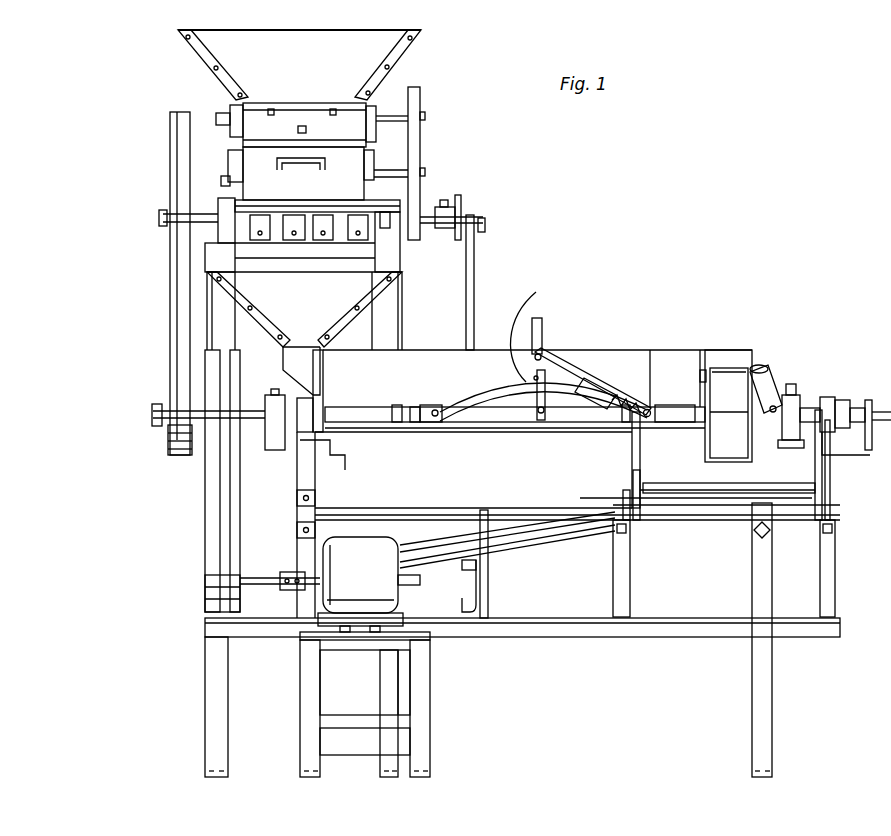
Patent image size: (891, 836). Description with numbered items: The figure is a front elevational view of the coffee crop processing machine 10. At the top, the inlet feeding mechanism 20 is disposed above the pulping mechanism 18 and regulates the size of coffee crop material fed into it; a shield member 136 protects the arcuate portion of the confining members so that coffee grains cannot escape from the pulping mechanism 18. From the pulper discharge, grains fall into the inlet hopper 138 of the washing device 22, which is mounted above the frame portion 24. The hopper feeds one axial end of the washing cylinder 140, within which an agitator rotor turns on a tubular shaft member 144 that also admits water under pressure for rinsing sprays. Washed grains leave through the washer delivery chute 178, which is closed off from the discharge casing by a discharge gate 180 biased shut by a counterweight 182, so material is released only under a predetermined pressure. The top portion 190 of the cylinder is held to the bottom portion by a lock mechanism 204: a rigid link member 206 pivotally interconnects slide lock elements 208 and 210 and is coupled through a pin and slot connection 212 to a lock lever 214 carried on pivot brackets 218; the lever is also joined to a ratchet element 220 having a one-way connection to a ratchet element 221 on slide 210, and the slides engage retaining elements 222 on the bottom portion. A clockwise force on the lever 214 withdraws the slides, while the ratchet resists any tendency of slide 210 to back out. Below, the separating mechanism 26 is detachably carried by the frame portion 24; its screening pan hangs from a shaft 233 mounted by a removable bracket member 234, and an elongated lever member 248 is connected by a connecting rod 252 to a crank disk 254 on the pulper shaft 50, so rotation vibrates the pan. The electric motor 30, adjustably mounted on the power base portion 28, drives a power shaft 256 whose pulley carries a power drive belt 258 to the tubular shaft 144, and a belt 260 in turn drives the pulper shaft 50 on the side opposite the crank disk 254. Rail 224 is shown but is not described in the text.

The coffee crop processing machine 10 is at (583, 207).
The pulping mechanism 18 is at (410, 253).
The inlet feeding mechanism 20 is at (404, 74).
The washing device 22 is at (628, 345).
The frame portion 24 is at (777, 689).
The separating mechanism 26 is at (834, 488).
The power base portion 28 is at (434, 700).
The electric motor 30 is at (369, 584).
The pulper shaft 50 is at (198, 214).
The shield member 136 is at (356, 160).
The inlet hopper 138 is at (304, 333).
The washing cylinder 140 is at (647, 345).
The tubular shaft member 144 is at (198, 428).
The washer delivery chute 178 is at (728, 406).
The discharge gate 180 is at (754, 378).
The counterweight 182 is at (777, 392).
The top portion of washer cylinder 190 is at (583, 348).
The lock mechanism 204 is at (567, 330).
The rigid link member 206 is at (500, 382).
The slide lock element 208 is at (426, 405).
The slide lock element 210 is at (668, 412).
The pin and slot connection 212 is at (532, 328).
The lock lever 214 is at (543, 318).
The pivot brackets 218 is at (531, 410).
The ratchet element 220 is at (603, 384).
The ratchet element 221 is at (633, 400).
The retaining elements 222 is at (394, 418).
The rail 224 is at (392, 422).
The shaft 233 is at (512, 510).
The removable bracket member 234 is at (316, 512).
The elongated lever member 248 is at (486, 556).
The connecting rod 252 is at (474, 262).
The crank disk 254 is at (461, 200).
The power shaft 256 is at (256, 578).
The power drive belt 258 is at (210, 519).
The belt 260 is at (170, 274).